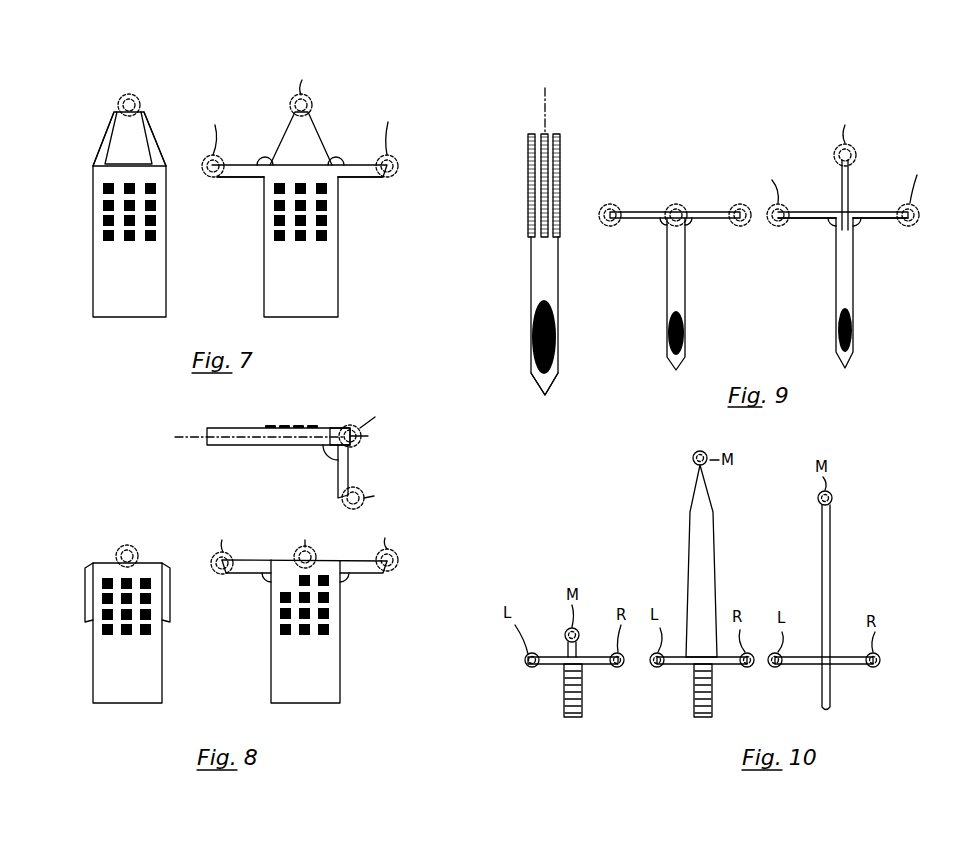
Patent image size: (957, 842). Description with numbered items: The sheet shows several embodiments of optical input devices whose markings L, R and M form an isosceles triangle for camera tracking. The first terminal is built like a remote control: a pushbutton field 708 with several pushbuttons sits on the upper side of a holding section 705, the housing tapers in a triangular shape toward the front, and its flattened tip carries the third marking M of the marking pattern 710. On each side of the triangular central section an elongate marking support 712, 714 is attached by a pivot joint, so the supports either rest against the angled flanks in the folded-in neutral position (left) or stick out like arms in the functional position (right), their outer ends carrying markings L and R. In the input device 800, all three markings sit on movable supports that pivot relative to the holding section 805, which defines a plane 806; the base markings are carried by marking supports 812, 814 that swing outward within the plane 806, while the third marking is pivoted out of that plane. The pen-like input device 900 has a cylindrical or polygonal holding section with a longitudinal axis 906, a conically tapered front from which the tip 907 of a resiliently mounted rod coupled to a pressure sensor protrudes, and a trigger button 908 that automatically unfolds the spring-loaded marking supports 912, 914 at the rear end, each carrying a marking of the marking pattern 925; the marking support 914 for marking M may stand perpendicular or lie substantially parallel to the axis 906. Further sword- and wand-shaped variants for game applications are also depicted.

In FIG. 7, the holding section 705 is at (328, 283).
In FIG. 7, the pushbutton field 708 is at (90, 213).
In FIG. 7, the marking pattern 710 is at (302, 182).
In FIG. 7, the marking support 712 is at (104, 140).
In FIG. 7, the marking support 714 is at (151, 131).
In FIG. 8, the input device 800 is at (113, 453).
In FIG. 8, the holding section 805 is at (333, 668).
In FIG. 8, the plane 806 is at (188, 437).
In FIG. 8, the marking support 812 is at (238, 573).
In FIG. 8, the marking support 814 is at (367, 573).
In FIG. 9, the input device 900 is at (775, 90).
In FIG. 9, the longitudinal axis 906 is at (548, 86).
In FIG. 9, the tip 907 is at (545, 397).
In FIG. 9, the trigger button 908 is at (560, 340).
In FIG. 9, the marking support 912 is at (807, 222).
In FIG. 9, the marking support 914 is at (877, 222).
In FIG. 9, the marking pattern 925 is at (902, 137).